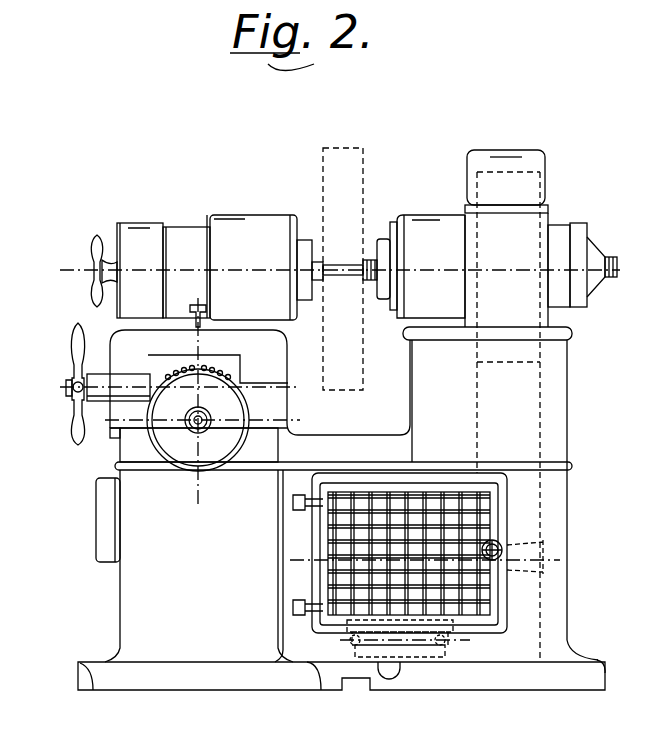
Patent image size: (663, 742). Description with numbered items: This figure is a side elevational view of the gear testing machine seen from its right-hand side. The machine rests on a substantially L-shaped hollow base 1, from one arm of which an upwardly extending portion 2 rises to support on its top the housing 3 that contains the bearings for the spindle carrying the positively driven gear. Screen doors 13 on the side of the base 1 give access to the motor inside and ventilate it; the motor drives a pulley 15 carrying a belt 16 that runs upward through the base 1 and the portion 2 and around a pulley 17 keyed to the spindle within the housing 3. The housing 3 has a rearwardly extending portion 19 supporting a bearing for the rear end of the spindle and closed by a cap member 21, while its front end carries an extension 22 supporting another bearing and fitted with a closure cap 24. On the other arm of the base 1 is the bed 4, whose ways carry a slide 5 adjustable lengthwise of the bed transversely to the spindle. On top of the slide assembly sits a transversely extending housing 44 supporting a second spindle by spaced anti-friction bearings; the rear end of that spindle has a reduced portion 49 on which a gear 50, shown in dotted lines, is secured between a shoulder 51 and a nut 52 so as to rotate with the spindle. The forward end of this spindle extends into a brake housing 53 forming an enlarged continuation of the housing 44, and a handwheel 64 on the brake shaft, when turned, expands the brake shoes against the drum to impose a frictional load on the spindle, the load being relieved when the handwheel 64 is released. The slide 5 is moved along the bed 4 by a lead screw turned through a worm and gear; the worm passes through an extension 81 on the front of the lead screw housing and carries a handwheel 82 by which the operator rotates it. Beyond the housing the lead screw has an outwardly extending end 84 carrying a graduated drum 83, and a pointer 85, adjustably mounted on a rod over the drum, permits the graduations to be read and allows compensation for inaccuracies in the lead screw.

The base 1 is at (138, 620).
The portion 2 is at (555, 402).
The housing 3 is at (462, 242).
The bed 4 is at (130, 448).
The slide 5 is at (276, 356).
The screen doors 13 is at (494, 603).
The pulley 15 is at (510, 553).
The belt 16 is at (478, 413).
The pulley 17 is at (533, 188).
The rearwardly extending portion 19 is at (572, 226).
The cap member 21 is at (594, 238).
The extension 22 is at (440, 217).
The closure cap 24 is at (390, 228).
The housing 44 is at (200, 227).
The reduced portion 49 is at (353, 277).
The gear 50 is at (357, 148).
The shoulder 51 is at (317, 288).
The nut 52 is at (370, 288).
The brake housing 53 is at (149, 223).
The handwheel 64 is at (90, 258).
The extension 81 is at (102, 374).
The handwheel 82 is at (72, 405).
The drum 83 is at (165, 466).
The outwardly extending end 84 is at (203, 415).
The pointer 85 is at (190, 355).